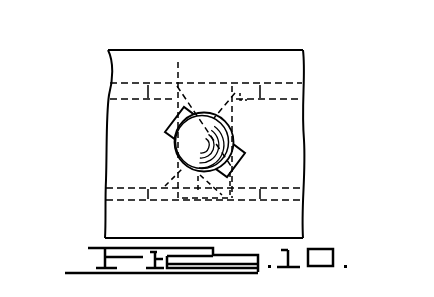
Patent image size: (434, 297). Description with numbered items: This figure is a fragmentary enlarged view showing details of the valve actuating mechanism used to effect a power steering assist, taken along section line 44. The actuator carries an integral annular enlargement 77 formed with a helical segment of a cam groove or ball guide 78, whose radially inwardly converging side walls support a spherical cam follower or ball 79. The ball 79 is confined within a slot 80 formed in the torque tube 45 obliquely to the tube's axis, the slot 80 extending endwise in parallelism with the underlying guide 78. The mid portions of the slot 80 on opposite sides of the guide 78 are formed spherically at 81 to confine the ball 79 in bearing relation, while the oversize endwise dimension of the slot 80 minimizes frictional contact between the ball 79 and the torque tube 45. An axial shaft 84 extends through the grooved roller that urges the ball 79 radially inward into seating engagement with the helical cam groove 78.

The section line 44 is at (104, 190).
The torque tube 45 is at (293, 62).
The annular enlargement 77 is at (193, 205).
The cam groove 78 is at (177, 64).
The ball 79 is at (197, 122).
The slot 80 is at (238, 160).
The spherical mid portions 81 is at (235, 142).
The axial shaft 84 is at (247, 90).